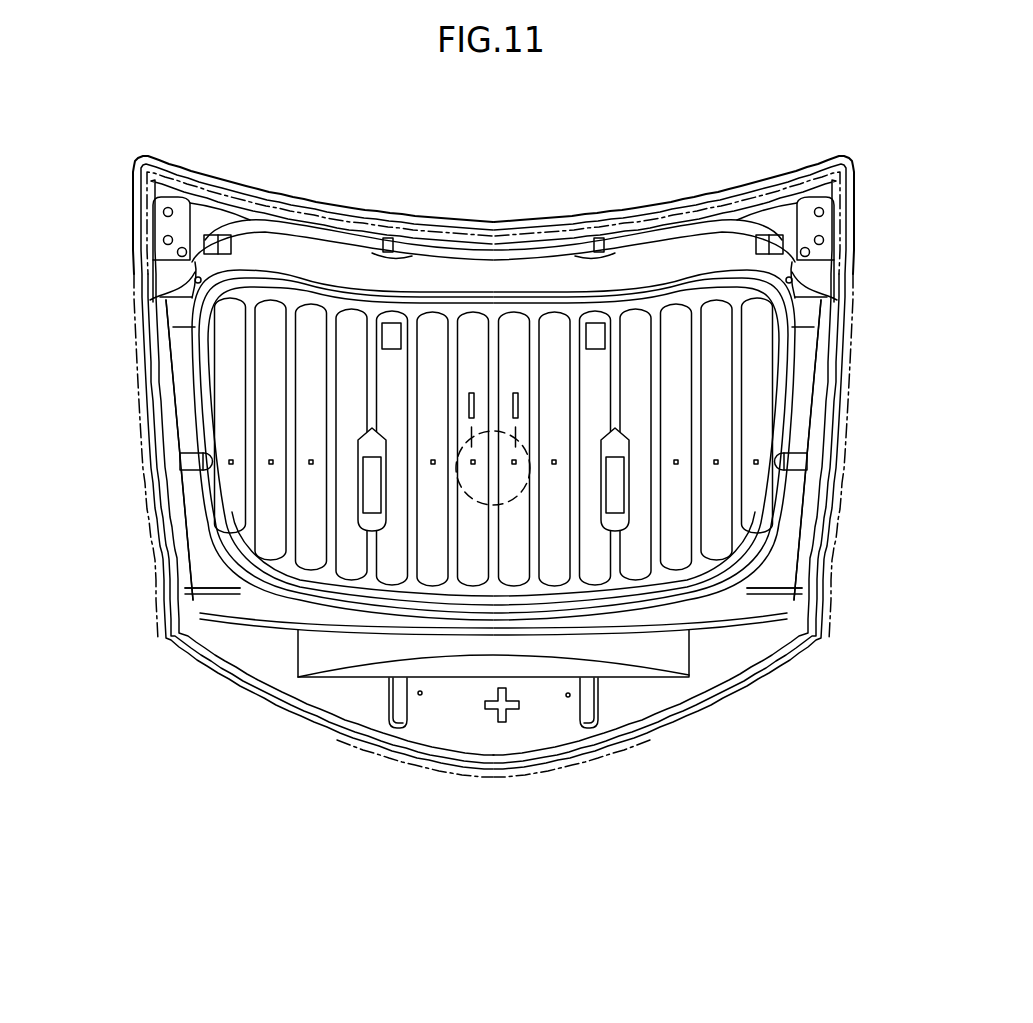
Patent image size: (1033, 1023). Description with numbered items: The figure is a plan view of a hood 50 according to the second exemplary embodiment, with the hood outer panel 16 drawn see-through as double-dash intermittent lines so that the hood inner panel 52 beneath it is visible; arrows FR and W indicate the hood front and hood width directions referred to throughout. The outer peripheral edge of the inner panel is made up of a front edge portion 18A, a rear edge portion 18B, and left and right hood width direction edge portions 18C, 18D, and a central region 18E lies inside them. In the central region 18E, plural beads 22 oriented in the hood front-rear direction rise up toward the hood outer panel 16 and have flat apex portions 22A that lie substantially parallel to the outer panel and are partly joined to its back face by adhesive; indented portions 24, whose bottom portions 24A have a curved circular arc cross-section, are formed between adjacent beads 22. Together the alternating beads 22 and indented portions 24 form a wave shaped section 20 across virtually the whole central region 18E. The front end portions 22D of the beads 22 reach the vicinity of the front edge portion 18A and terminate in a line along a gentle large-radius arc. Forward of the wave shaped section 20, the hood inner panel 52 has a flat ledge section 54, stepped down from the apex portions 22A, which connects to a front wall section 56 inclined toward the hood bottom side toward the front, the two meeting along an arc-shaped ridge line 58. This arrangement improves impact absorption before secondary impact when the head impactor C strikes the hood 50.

The hood outer panel 16 is at (181, 668).
The front edge portion 18A is at (360, 713).
The rear edge portion 18B is at (687, 262).
The hood width direction edge portion 18C is at (808, 355).
The hood width direction edge portion 18D is at (182, 362).
The central region 18E is at (722, 490).
The wave shaped section 20 is at (545, 452).
The beads 22 is at (435, 543).
The apex portions 22A is at (457, 338).
The front end portion 22D is at (580, 582).
The indented portions 24 is at (314, 550).
The bottom portion 24A is at (322, 330).
The hood 50 is at (130, 729).
The hood inner panel 52 is at (178, 603).
The ledge section 54 is at (517, 594).
The front wall section 56 is at (460, 618).
The ridge line 58 is at (510, 600).
The head impactor C is at (522, 442).
The vehicle front direction FR is at (120, 628).
The vehicle width direction W is at (540, 822).